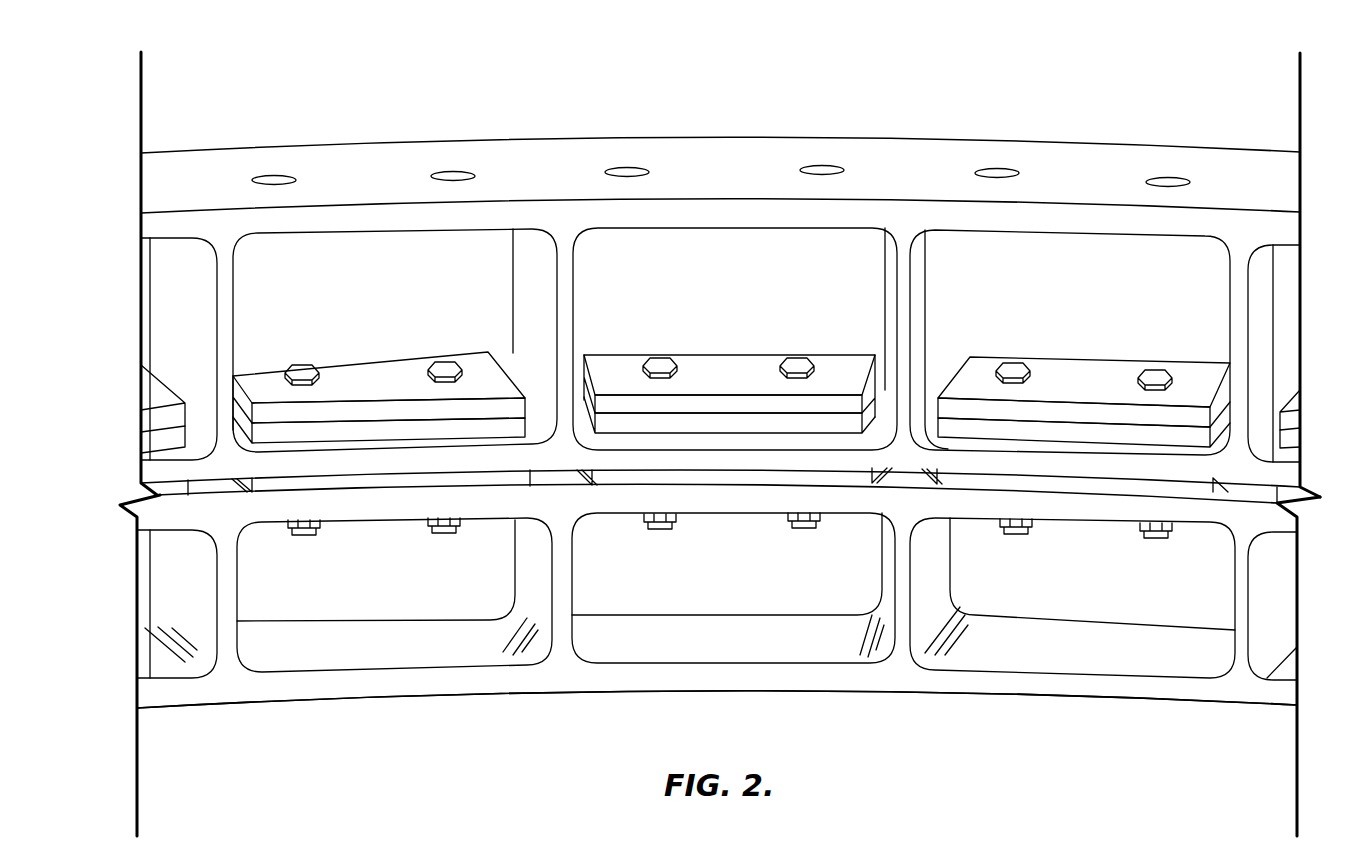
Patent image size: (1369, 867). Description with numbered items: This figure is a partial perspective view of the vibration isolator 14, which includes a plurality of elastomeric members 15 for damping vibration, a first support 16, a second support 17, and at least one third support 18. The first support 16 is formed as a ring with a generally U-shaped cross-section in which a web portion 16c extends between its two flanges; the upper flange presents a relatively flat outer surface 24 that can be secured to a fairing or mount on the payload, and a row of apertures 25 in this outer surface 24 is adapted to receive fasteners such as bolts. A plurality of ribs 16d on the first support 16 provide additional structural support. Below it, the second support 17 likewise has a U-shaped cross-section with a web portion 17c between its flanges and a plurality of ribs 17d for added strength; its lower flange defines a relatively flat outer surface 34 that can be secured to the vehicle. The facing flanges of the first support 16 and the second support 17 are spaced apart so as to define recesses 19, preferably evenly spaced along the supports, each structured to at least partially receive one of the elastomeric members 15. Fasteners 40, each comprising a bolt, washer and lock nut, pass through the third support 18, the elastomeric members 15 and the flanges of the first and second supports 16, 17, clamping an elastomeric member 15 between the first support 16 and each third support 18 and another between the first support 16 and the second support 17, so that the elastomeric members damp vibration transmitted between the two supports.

The vibration isolator 14 is at (230, 110).
The elastomeric members 15 is at (620, 430).
The first support 16 is at (910, 160).
The web portion 16c is at (385, 265).
The ribs 16d is at (229, 267).
The second support 17 is at (355, 683).
The web portion 17c is at (445, 600).
The ribs 17d is at (227, 603).
The third support 18 is at (259, 378).
The recess 19 is at (192, 495).
The outer surface 24 is at (352, 165).
The apertures 25 is at (274, 176).
The outer surface 34 is at (1007, 707).
The fasteners 40 is at (445, 362).